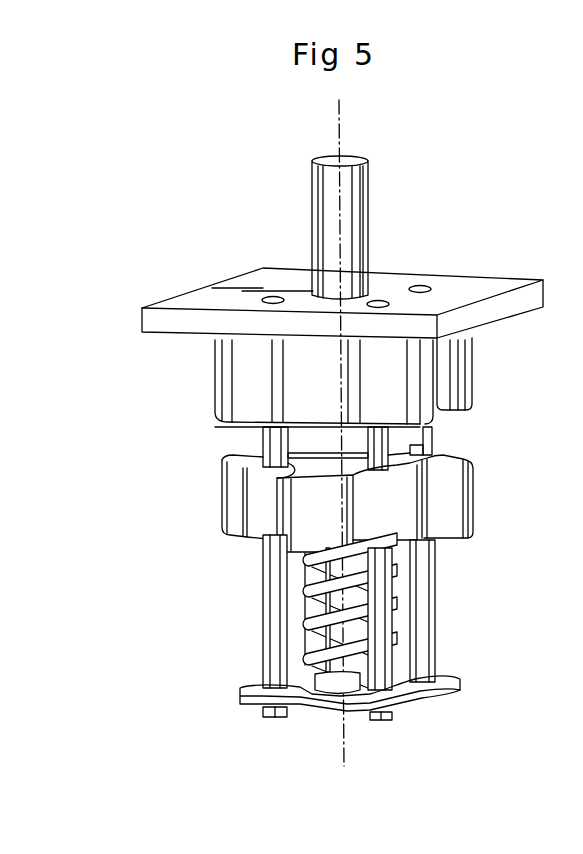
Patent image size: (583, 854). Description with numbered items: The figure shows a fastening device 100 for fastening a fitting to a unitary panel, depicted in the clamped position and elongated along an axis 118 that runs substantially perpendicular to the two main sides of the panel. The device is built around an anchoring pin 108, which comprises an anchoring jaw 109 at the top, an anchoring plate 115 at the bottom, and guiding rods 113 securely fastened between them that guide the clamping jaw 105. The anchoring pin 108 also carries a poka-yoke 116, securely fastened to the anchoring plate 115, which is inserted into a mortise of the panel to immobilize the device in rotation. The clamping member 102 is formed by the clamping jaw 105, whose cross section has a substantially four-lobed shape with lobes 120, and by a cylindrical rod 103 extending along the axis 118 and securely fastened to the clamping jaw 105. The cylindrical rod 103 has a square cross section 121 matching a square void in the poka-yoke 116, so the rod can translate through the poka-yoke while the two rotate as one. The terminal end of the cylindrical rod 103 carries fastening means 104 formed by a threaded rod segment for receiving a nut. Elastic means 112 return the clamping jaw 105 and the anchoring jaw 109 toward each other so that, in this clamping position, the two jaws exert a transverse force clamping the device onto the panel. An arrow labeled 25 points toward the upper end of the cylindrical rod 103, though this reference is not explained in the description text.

The assembly 100 is at (148, 242).
The pin 25 is at (267, 317).
The pin tip 104 is at (357, 160).
The pin shaft 103 is at (323, 207).
The body 102 is at (357, 222).
The top plate 109 is at (478, 285).
The guide rods 108 is at (250, 382).
The upper block 116 is at (313, 398).
The spacer 121 is at (313, 442).
The lower block 120 is at (262, 506).
The housing 105 is at (307, 532).
The guide posts 113 is at (272, 570).
The spring 112 is at (313, 590).
The base plate 115 is at (462, 688).
The central axis 118 is at (343, 745).